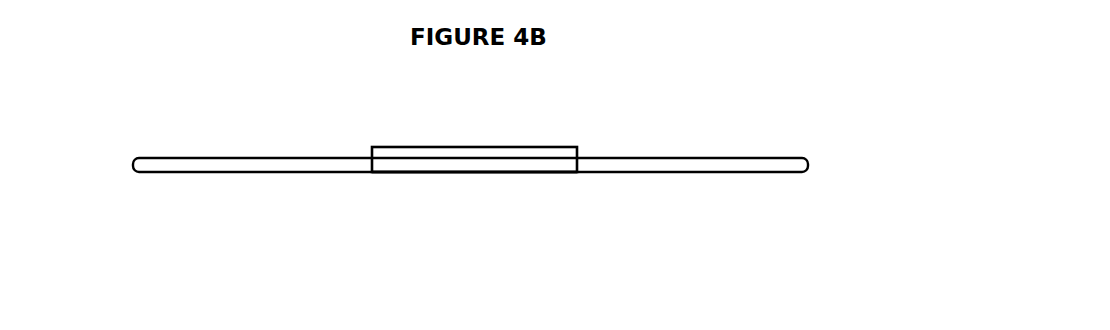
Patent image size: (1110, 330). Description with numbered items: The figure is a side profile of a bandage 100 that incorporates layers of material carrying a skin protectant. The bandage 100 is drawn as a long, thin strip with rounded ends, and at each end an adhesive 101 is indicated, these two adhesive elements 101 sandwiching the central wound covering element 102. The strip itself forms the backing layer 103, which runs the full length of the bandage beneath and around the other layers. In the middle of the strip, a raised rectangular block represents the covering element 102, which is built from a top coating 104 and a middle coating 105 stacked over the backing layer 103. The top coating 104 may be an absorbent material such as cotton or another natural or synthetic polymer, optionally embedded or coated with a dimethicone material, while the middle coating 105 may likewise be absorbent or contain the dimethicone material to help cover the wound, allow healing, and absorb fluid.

The bandage 100 is at (673, 178).
The adhesive 101 is at (187, 165).
The covering element 102 is at (428, 167).
The backing layer 103 is at (470, 166).
The top coating 104 is at (410, 146).
The middle coating 105 is at (472, 165).